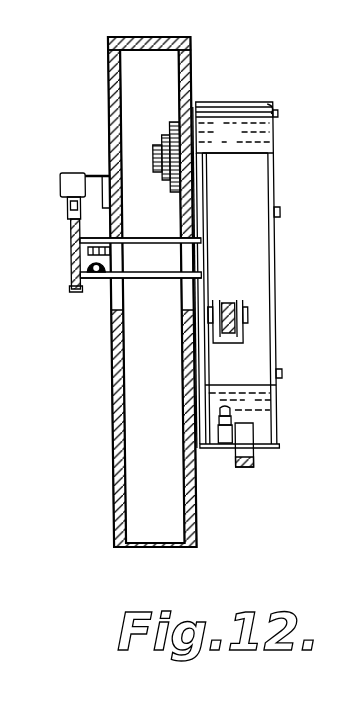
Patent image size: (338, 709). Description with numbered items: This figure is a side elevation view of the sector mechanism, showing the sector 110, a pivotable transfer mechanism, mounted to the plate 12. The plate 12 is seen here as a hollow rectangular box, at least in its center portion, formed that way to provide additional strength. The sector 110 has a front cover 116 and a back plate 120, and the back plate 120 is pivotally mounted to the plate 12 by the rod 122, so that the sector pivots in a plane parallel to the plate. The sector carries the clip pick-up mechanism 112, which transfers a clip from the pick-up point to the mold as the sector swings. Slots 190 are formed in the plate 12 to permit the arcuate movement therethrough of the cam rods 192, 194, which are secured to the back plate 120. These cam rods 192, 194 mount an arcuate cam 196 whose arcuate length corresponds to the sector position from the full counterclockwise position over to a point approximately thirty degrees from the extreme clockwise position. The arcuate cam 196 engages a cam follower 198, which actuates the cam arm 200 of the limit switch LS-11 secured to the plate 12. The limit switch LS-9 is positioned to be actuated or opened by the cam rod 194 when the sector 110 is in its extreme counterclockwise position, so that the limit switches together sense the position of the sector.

The plate 12 is at (115, 376).
The sector 110 is at (255, 83).
The clip pick-up mechanism 112 is at (248, 457).
The front cover 116 is at (282, 94).
The back plate 120 is at (201, 196).
The rod 122 is at (152, 145).
The slots 190 is at (112, 297).
The cam rod 192 is at (156, 238).
The cam rod 194 is at (133, 280).
The arcuate cam 196 is at (74, 255).
The cam follower 198 is at (69, 222).
The cam arm 200 is at (65, 207).
The limit switch LS-11 is at (78, 176).
The limit switch LS-9 is at (73, 285).